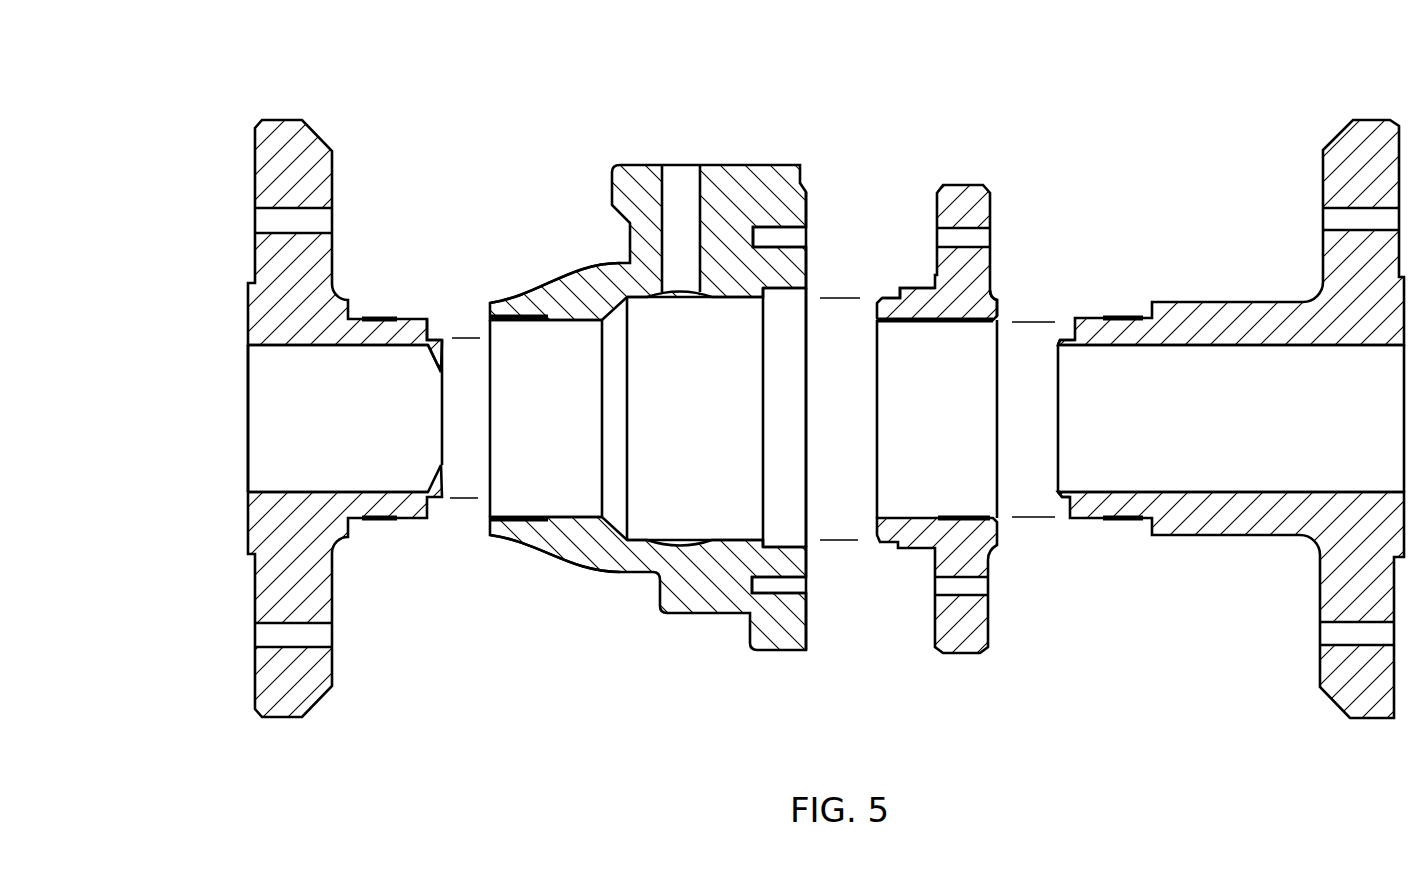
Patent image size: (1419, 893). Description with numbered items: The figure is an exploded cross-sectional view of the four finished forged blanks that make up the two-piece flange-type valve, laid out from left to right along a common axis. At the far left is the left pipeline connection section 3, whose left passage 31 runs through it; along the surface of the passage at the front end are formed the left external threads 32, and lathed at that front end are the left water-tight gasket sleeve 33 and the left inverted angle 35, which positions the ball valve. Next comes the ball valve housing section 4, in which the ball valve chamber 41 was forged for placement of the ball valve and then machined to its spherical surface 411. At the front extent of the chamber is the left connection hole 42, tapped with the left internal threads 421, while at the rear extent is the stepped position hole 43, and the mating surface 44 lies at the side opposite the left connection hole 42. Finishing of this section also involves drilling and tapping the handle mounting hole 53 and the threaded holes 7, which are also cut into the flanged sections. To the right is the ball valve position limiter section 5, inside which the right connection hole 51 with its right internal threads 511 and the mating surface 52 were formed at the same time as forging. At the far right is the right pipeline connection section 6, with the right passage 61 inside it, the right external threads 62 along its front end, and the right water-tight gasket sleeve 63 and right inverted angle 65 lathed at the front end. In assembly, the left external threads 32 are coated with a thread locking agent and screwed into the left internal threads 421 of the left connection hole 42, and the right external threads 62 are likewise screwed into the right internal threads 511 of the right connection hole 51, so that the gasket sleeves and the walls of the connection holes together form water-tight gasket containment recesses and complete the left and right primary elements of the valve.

The left pipeline connection section 3 is at (709, 374).
The left passage 31 is at (277, 410).
The left external threads 32 is at (375, 319).
The left water-tight gasket sleeve 33 is at (438, 340).
The left inverted angle 35 is at (443, 383).
The ball valve housing section 4 is at (642, 397).
The ball valve chamber 41 is at (745, 517).
The spherical surface 411 is at (667, 567).
The left connection hole 42 is at (510, 483).
The left internal threads 421 is at (535, 520).
The stepped position hole 43 is at (793, 303).
The mating surface 44 is at (787, 235).
The handle mounting hole 53 is at (686, 172).
The ball valve position limiter section 5 is at (709, 393).
The right connection hole 51 is at (987, 343).
The right internal threads 511 is at (988, 278).
The mating surface 52 is at (937, 253).
The right pipeline connection section 6 is at (709, 398).
The right passage 61 is at (1073, 440).
The right external threads 62 is at (1105, 318).
The right water-tight gasket sleeve 63 is at (1060, 497).
The right inverted angle 65 is at (1064, 347).
The threaded holes 7 is at (318, 220).